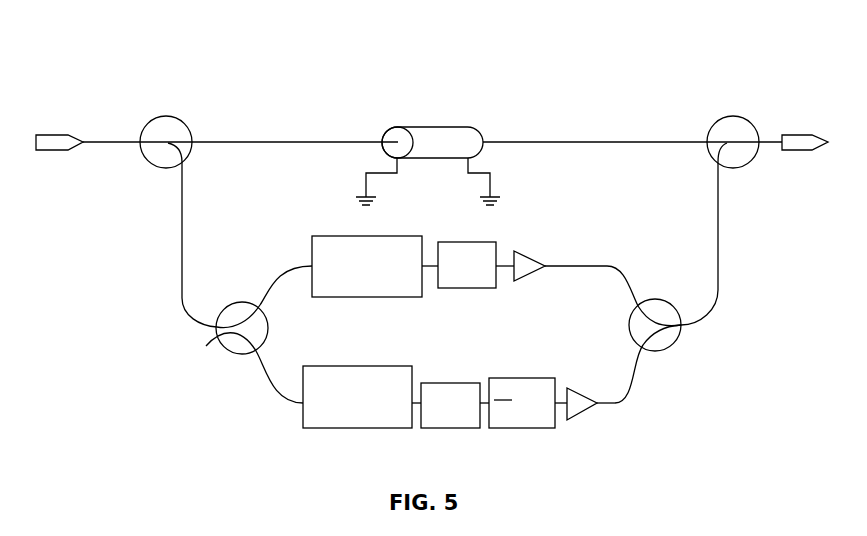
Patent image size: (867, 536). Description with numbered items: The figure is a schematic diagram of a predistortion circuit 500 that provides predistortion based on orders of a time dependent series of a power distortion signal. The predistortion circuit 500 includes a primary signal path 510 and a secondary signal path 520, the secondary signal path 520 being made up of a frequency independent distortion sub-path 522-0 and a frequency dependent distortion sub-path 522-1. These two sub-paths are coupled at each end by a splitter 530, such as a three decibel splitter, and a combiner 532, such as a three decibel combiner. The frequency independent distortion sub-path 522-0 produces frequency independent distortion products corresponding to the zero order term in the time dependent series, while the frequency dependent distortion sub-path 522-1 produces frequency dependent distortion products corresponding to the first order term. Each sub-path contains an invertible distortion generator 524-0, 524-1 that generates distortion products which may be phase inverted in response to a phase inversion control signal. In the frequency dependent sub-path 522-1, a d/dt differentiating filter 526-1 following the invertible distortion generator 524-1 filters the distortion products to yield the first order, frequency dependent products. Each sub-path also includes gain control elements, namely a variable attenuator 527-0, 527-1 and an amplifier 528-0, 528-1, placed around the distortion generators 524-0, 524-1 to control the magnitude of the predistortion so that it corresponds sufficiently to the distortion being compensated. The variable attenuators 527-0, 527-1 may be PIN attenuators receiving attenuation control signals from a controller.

The predistortion circuit 500 is at (219, 65).
The primary signal path 510 is at (462, 97).
The secondary signal path 520 is at (108, 275).
The frequency independent distortion sub-path 522-0 is at (249, 266).
The frequency dependent distortion sub-path 522-1 is at (266, 390).
The invertible distortion generator 524-0 is at (336, 236).
The invertible distortion generator 524-1 is at (315, 366).
The d/dt differentiating filter 526-1 is at (527, 378).
The variable attenuator 527-0 is at (450, 242).
The variable attenuator 527-1 is at (452, 383).
The amplifier 528-0 is at (538, 252).
The amplifier 528-1 is at (588, 391).
The splitter 530 is at (208, 346).
The combiner 532 is at (676, 348).